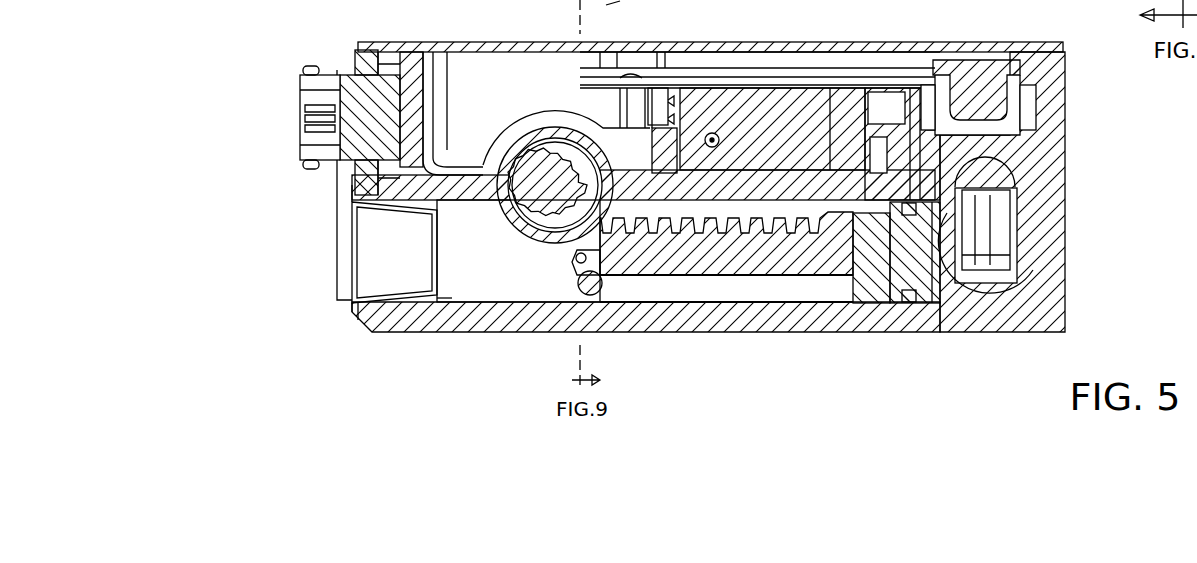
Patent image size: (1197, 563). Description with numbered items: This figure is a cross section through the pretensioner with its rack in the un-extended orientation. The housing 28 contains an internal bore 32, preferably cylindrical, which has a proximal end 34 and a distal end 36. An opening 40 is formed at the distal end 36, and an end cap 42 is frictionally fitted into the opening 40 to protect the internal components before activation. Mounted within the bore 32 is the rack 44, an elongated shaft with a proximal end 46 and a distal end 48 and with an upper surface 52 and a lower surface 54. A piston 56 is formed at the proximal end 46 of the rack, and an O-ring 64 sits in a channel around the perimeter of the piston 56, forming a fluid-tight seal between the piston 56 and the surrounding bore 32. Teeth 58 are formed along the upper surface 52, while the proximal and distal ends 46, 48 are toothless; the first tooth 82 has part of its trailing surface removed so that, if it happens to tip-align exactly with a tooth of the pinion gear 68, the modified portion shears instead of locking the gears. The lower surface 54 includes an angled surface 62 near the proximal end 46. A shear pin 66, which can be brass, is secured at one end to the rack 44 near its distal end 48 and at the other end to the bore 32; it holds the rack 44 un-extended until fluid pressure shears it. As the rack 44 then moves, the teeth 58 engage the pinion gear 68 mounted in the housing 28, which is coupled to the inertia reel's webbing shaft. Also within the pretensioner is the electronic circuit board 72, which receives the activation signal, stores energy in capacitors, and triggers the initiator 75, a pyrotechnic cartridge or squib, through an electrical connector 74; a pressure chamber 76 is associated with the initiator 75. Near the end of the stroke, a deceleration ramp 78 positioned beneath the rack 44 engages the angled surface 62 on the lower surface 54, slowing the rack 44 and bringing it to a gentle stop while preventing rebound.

The housing 28 is at (918, 318).
The internal bore 32 is at (462, 280).
The proximal end 34 is at (1032, 235).
The distal end 36 is at (447, 296).
The opening 40 is at (350, 312).
The end cap 42 is at (345, 238).
The rack 44 is at (805, 258).
The proximal end 46 is at (885, 283).
The distal end 48 is at (572, 268).
The upper surface 52 is at (828, 200).
The lower surface 54 is at (705, 275).
The piston 56 is at (915, 275).
The teeth 58 is at (690, 200).
The angled surface 62 is at (855, 280).
The O-ring 64 is at (910, 200).
The shear pin 66 is at (574, 258).
The pinion gear 68 is at (542, 146).
The electronic circuit board 72 is at (782, 105).
The electrical connector 74 is at (985, 100).
The initiator 75 is at (1020, 165).
The pressure chamber 76 is at (1000, 240).
The deceleration ramp 78 is at (593, 292).
The first tooth 82 is at (622, 200).